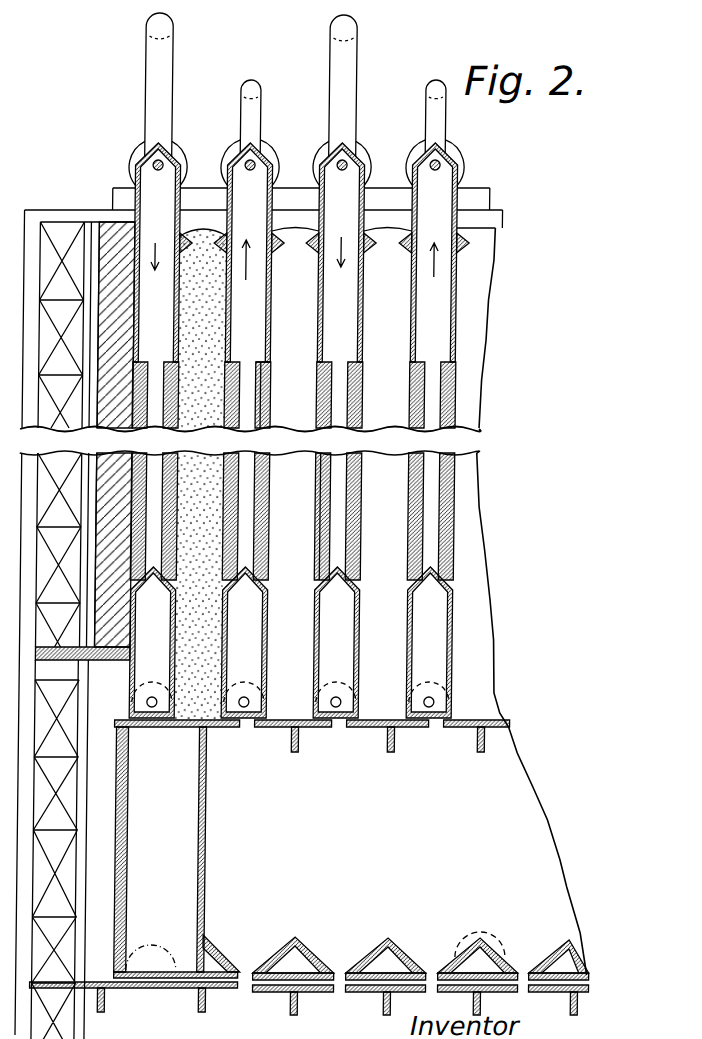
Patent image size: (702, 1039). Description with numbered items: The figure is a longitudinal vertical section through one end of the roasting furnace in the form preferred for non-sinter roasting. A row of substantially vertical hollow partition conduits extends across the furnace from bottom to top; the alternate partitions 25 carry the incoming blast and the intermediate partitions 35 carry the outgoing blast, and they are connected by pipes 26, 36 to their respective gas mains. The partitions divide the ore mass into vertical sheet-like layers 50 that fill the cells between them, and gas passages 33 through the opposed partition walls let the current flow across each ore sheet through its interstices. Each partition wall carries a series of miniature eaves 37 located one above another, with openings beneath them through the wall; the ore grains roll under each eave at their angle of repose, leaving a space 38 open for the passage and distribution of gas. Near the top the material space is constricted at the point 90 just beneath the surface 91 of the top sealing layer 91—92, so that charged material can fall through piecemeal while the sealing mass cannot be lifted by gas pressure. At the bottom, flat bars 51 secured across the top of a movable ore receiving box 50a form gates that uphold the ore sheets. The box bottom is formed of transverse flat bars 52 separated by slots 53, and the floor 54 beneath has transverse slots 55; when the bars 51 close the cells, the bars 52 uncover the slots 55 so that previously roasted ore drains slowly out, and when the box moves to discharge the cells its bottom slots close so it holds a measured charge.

The incoming-blast partition conduit 25 is at (370, 661).
The outgoing-blast partition conduit 35 is at (470, 666).
The pipe connecting incoming partition to gas main 26 is at (365, 86).
The pipe connecting outgoing partition to gas main 36 is at (446, 111).
The gas passage 33 is at (420, 551).
The miniature eave 37 is at (371, 477).
The space under eave 38 is at (268, 364).
The ore sheet layer 50 is at (340, 371).
The movable ore receiving box 50a is at (503, 851).
The upper flat bar 51 is at (290, 735).
The bottom flat bar 52 is at (318, 981).
The slot between bottom bars 53 is at (348, 989).
The floor 54 is at (378, 1001).
The floor slot 55 is at (351, 1001).
The constricted point 90 is at (202, 328).
The top sealing layer surface 91 is at (192, 235).
The top sealing layer 92 is at (190, 361).